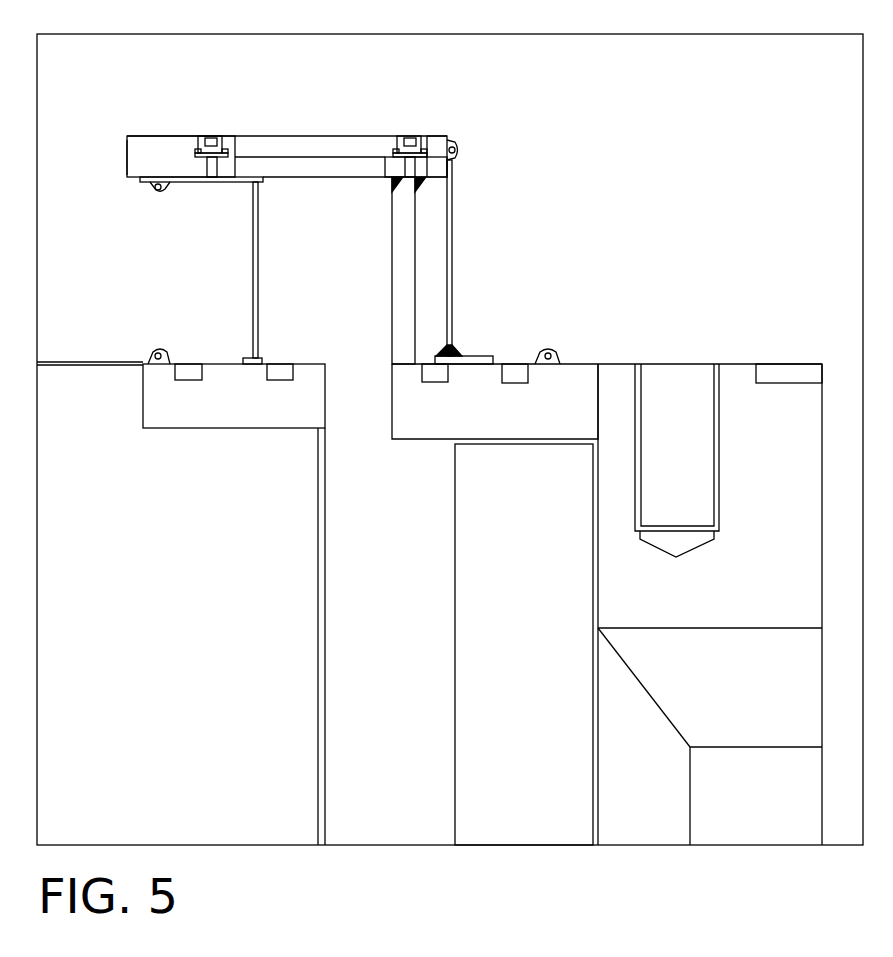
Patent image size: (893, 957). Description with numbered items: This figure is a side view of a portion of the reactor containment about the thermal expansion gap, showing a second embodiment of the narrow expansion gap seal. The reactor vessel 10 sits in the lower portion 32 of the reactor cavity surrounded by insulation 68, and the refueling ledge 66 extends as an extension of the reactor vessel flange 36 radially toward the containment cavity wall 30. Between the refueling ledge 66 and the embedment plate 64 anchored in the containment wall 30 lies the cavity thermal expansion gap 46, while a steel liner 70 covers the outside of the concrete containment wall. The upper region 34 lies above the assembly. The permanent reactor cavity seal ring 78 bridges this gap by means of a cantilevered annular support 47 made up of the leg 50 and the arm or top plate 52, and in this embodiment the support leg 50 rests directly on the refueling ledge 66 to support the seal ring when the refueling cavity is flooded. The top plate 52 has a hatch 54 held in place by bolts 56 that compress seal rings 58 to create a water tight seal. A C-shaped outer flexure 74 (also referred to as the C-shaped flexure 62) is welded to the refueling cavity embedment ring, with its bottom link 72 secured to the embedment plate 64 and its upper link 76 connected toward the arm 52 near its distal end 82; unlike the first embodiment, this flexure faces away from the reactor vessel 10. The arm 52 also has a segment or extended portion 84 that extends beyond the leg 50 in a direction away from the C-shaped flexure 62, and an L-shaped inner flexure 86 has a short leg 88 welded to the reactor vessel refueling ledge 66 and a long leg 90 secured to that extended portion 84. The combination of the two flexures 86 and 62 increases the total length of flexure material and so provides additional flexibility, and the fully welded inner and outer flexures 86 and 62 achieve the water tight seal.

The reactor vessel 10 is at (759, 696).
The containment cavity wall 30 is at (189, 617).
The lower portion of the reactor cavity 32 is at (652, 777).
The upper region 34 is at (704, 192).
The reactor vessel flange 36 is at (742, 382).
The cavity thermal expansion gap 46 is at (402, 801).
The cantilevered annular support 47 is at (362, 193).
The leg 50 is at (390, 287).
The arm or top plate 52 is at (152, 145).
The hatch 54 is at (313, 147).
The bolts 56 is at (408, 137).
The seal rings 58 is at (222, 153).
The C-shaped outer flexure 62 is at (232, 297).
The embedment plate 64 is at (315, 390).
The refueling ledge 66 is at (425, 430).
The insulation 68 is at (465, 622).
The steel liner 70 is at (326, 636).
The bottom link 72 is at (193, 357).
The C-shaped outer flexure 74 is at (260, 333).
The upper link 76 is at (210, 182).
The permanent reactor cavity seal ring 78 is at (205, 145).
The distal end 82 is at (126, 152).
The extended portion 84 is at (437, 137).
The L-shaped inner flexure 86 is at (478, 268).
The short leg 88 is at (495, 362).
The long leg 90 is at (452, 225).